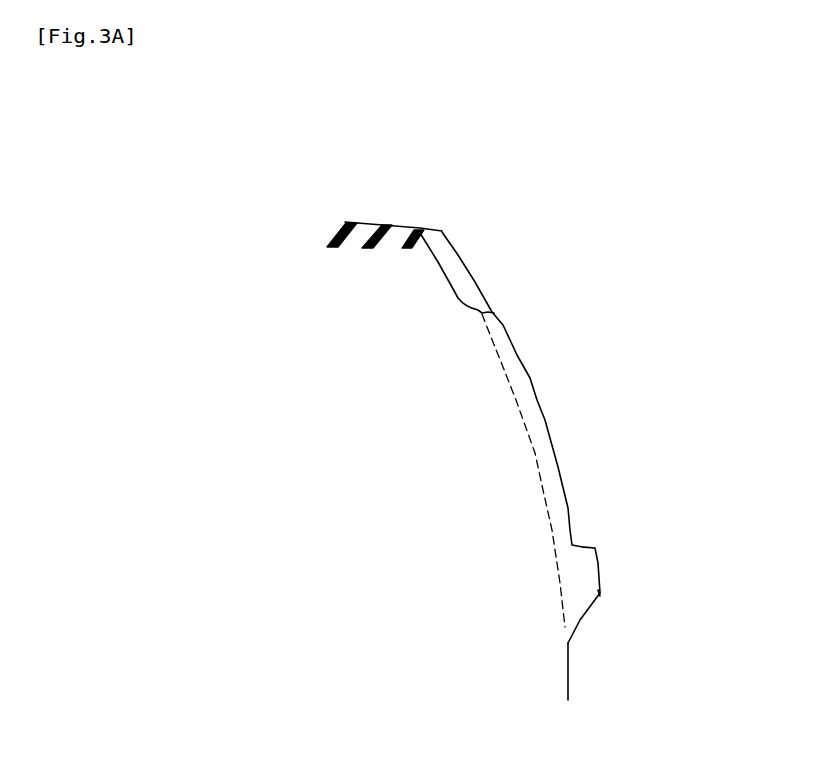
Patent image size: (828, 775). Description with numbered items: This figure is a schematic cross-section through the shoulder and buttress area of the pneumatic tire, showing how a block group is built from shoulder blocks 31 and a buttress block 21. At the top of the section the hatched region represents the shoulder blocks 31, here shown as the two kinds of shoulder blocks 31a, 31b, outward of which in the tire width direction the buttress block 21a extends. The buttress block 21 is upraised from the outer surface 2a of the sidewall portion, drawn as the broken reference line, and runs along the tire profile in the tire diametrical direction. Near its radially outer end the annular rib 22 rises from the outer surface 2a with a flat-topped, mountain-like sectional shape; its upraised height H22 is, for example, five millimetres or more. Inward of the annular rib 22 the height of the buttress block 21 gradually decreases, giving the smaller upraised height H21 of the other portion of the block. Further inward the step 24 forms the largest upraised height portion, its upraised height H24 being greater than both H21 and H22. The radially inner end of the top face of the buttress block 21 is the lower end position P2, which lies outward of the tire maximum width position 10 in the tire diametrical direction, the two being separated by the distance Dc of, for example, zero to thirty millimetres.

The shoulder block 31 is at (426, 193).
The shoulder block 31a is at (375, 222).
The shoulder block 31b is at (428, 228).
The buttress block 21 is at (563, 412).
The buttress block 21a is at (568, 508).
The annular rib 22 is at (535, 380).
The outer surface of the sidewall portion 2a is at (549, 520).
The upraised height of the annular rib H22 is at (483, 410).
The upraised height of the buttress block H21 is at (510, 478).
The upraised height of the step H24 is at (530, 575).
The step 24 is at (602, 576).
The lower end position P2 is at (605, 595).
The distance Dc is at (568, 665).
The tire maximum width position 10 is at (570, 663).